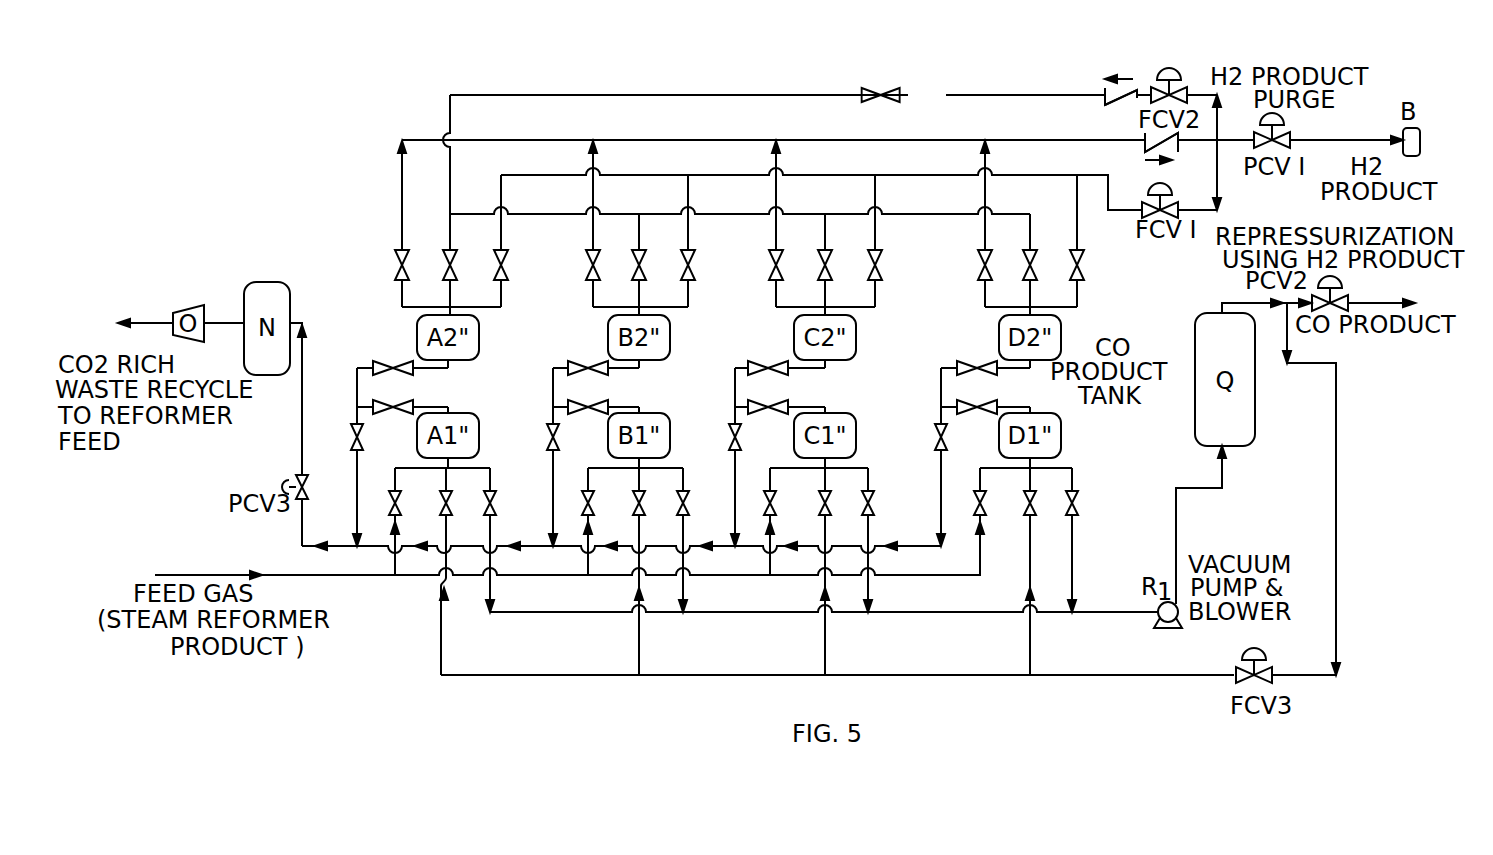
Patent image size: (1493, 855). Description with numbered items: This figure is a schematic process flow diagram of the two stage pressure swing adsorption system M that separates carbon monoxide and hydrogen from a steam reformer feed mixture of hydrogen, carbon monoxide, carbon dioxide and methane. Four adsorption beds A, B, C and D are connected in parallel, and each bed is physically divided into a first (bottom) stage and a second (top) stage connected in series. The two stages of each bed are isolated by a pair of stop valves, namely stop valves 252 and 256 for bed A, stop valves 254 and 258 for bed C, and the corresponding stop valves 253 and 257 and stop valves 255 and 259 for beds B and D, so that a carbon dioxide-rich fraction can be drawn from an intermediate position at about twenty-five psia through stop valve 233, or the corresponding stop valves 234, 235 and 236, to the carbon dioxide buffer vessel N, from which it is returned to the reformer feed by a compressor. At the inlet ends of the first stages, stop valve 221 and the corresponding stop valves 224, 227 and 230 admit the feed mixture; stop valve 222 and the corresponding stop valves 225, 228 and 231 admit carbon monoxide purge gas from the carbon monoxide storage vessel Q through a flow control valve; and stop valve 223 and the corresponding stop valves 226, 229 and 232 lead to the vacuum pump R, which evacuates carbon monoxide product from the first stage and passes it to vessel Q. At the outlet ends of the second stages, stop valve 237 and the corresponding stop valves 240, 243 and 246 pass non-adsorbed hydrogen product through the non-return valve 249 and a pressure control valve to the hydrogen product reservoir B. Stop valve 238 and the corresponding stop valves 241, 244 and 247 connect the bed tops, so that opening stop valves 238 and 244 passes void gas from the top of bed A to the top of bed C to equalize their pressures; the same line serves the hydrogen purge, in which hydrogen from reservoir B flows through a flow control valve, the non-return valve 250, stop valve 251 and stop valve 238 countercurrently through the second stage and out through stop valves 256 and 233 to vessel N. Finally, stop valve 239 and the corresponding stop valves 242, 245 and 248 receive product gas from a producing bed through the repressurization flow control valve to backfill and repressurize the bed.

The stop valve 221 is at (387, 504).
The stop valve 222 is at (454, 500).
The stop valve 223 is at (490, 498).
The stop valve 224 is at (572, 509).
The stop valve 225 is at (644, 500).
The stop valve 226 is at (672, 518).
The stop valve 227 is at (763, 498).
The stop valve 228 is at (828, 501).
The stop valve 229 is at (866, 500).
The stop valve 230 is at (958, 506).
The stop valve 231 is at (1046, 520).
The stop valve 232 is at (1074, 516).
The stop valve 233 is at (380, 455).
The stop valve 234 is at (578, 440).
The stop valve 235 is at (757, 440).
The stop valve 236 is at (962, 455).
The stop valve 237 is at (392, 272).
The stop valve 238 is at (480, 250).
The stop valve 239 is at (528, 282).
The stop valve 240 is at (582, 262).
The stop valve 241 is at (646, 270).
The stop valve 242 is at (712, 278).
The stop valve 243 is at (774, 262).
The stop valve 244 is at (830, 270).
The stop valve 245 is at (896, 280).
The stop valve 246 is at (976, 262).
The stop valve 247 is at (1032, 270).
The stop valve 248 is at (1104, 280).
The non-return valve 249 is at (1180, 144).
The non-return valve 250 is at (1098, 92).
The stop valve 251 is at (940, 62).
The stop valve 252 is at (386, 402).
The stop valve 253 is at (578, 398).
The stop valve 254 is at (757, 398).
The stop valve 255 is at (966, 402).
The stop valve 256 is at (409, 369).
The stop valve 257 is at (578, 353).
The stop valve 258 is at (759, 353).
The stop valve 259 is at (987, 369).